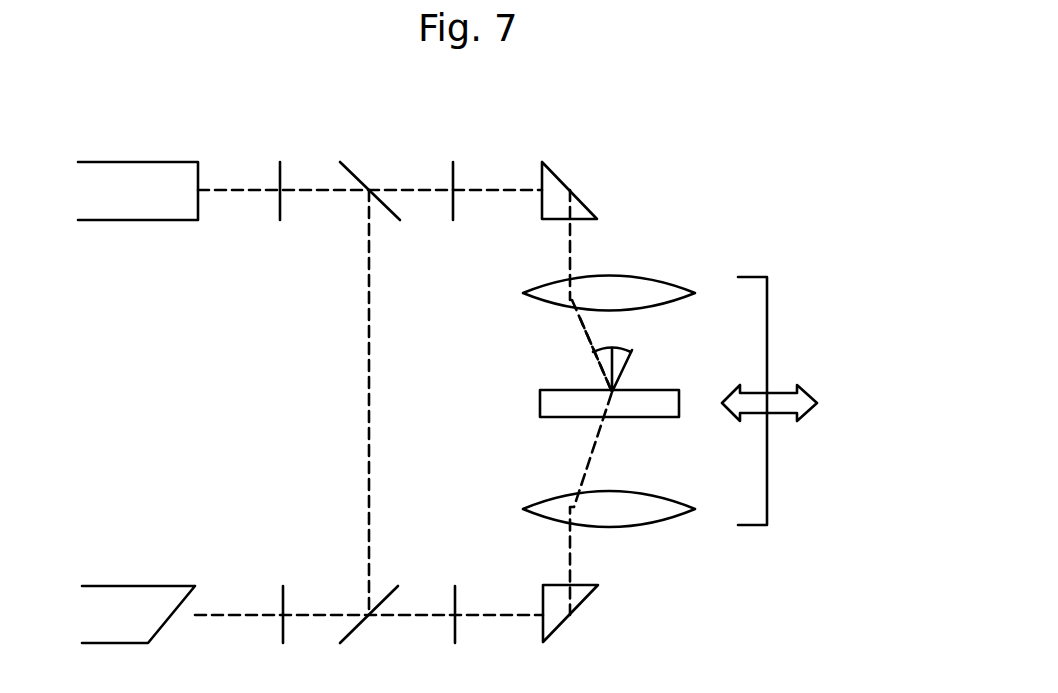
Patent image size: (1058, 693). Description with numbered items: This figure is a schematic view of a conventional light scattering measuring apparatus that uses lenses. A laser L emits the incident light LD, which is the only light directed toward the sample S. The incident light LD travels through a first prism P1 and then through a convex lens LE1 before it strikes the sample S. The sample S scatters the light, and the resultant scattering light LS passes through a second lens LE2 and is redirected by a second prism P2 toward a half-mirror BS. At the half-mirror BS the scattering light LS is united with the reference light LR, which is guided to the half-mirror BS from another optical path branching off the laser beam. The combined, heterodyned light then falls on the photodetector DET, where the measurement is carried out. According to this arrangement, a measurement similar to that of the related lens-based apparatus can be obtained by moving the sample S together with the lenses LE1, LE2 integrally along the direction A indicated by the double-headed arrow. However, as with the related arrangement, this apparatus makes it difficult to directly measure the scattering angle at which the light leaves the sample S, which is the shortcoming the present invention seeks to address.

The photodetector DET is at (148, 160).
The half-mirror BS is at (357, 176).
The reference light LR is at (368, 408).
The second prism P2 is at (557, 176).
The lens LE2 is at (659, 290).
The scattering light LS is at (580, 336).
The sample S is at (554, 398).
The direction A is at (779, 401).
The convex lens LE1 is at (656, 527).
The first prism P1 is at (542, 589).
The incident light LD is at (414, 612).
The laser L is at (132, 590).